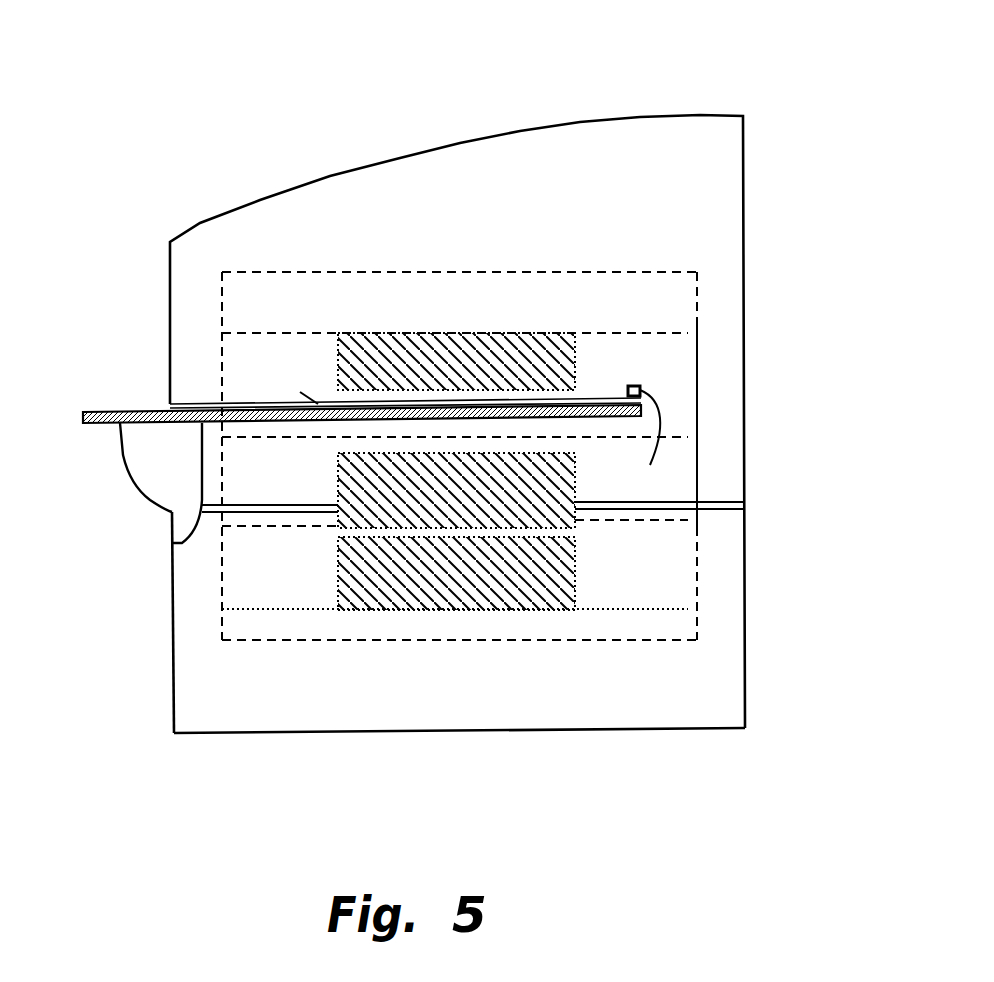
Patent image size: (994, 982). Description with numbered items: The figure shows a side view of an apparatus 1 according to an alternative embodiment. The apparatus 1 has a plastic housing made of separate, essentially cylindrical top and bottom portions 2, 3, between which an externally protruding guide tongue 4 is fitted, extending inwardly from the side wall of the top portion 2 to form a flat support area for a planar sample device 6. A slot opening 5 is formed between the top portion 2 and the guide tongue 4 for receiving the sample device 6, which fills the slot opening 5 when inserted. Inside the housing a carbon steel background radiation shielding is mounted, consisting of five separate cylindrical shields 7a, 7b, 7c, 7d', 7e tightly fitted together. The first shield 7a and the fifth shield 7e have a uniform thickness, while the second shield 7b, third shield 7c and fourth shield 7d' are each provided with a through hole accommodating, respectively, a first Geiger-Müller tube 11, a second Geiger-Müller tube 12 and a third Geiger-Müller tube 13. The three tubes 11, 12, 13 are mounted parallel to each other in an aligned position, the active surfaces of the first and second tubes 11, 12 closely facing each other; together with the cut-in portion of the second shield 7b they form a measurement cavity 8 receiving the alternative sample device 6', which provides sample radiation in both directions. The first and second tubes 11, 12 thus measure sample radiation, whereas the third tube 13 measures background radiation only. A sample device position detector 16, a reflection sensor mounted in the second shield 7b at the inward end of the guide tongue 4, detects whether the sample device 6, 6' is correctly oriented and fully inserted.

The apparatus 1 is at (358, 140).
The top portion 2 is at (722, 187).
The bottom portion 3 is at (737, 637).
The guide tongue 4 is at (146, 449).
The slot opening 5 is at (172, 409).
The sample device 6 is at (730, 382).
The alternative sample device 6' is at (730, 382).
The first shield 7a is at (687, 312).
The second shield 7b is at (675, 360).
The third shield 7c is at (675, 473).
The fourth shield 7d' is at (540, 581).
The fifth shield 7e is at (687, 622).
The measurement cavity 8 is at (318, 404).
The first Geiger-Müller tube 11 is at (553, 332).
The second Geiger-Müller tube 12 is at (452, 483).
The third Geiger-Müller tube 13 is at (423, 597).
The sample device position detector 16 is at (640, 390).